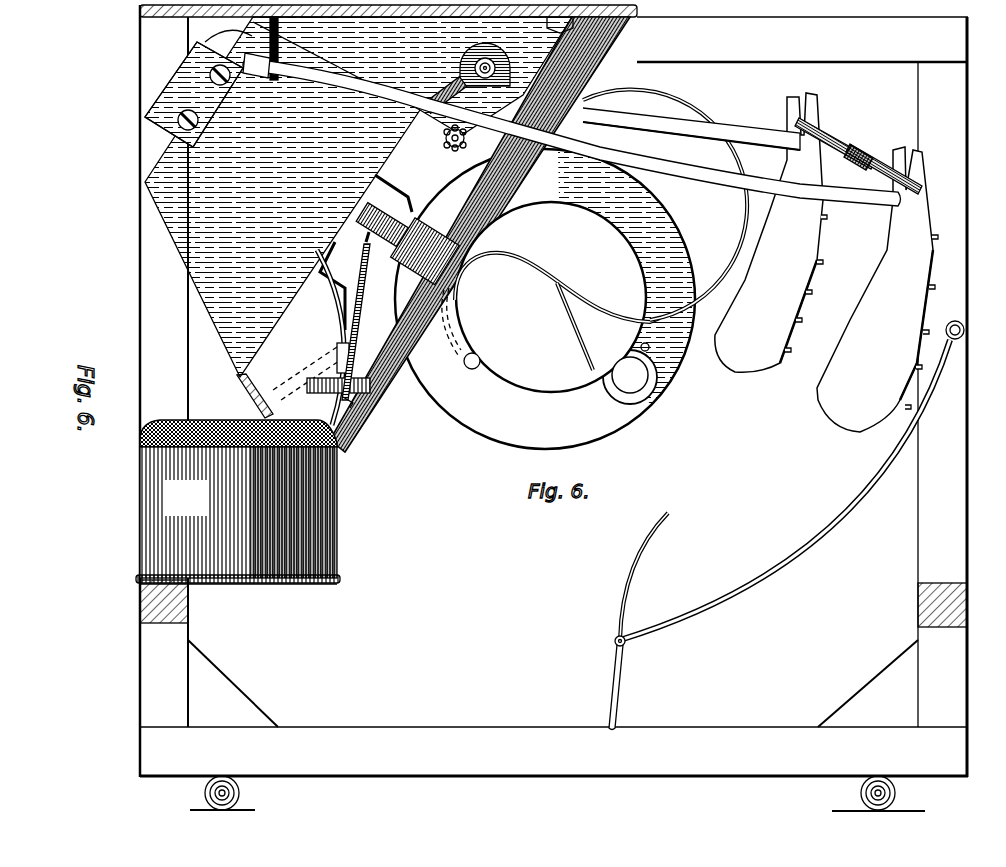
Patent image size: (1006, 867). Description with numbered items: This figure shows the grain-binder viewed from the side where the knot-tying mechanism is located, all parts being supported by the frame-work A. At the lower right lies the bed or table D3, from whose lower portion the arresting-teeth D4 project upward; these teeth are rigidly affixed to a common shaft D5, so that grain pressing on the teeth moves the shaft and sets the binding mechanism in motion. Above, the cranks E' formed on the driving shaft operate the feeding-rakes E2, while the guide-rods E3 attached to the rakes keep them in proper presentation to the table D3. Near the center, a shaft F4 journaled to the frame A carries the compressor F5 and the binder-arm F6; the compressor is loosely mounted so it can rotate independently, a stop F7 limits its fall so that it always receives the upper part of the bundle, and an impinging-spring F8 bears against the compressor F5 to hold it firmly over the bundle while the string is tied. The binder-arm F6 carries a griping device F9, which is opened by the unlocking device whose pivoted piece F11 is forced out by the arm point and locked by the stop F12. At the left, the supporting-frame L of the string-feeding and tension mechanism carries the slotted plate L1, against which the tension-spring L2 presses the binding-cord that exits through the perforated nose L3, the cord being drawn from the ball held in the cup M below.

The frame-work A is at (553, 408).
The cup M is at (238, 502).
The shaft F4 is at (630, 368).
The compressor F5 is at (557, 287).
The binder-arm F6 is at (501, 291).
The stop F7 is at (652, 392).
The impinging-spring F8 is at (590, 326).
The griping device F9 is at (465, 137).
The unlocking piece F11 is at (499, 63).
The stop F12 is at (458, 78).
The cranks E' is at (858, 154).
The feeding-rakes E2 is at (826, 262).
The guide-rods E3 is at (572, 129).
The supporting-frame L is at (344, 327).
The plate L1 is at (339, 374).
The tension-spring L2 is at (356, 296).
The perforated nose L3 is at (366, 250).
The bed or table D3 is at (792, 480).
The arresting-teeth D4 is at (670, 515).
The shaft D5 is at (614, 641).